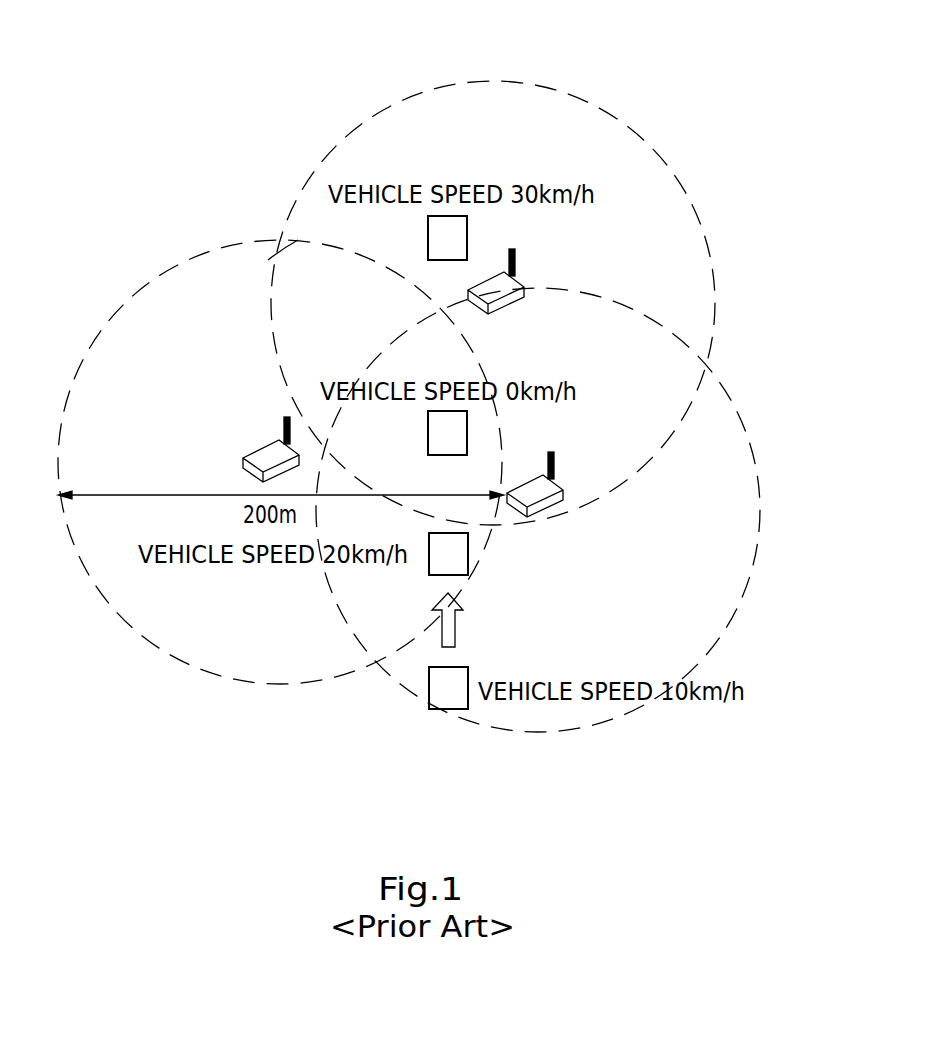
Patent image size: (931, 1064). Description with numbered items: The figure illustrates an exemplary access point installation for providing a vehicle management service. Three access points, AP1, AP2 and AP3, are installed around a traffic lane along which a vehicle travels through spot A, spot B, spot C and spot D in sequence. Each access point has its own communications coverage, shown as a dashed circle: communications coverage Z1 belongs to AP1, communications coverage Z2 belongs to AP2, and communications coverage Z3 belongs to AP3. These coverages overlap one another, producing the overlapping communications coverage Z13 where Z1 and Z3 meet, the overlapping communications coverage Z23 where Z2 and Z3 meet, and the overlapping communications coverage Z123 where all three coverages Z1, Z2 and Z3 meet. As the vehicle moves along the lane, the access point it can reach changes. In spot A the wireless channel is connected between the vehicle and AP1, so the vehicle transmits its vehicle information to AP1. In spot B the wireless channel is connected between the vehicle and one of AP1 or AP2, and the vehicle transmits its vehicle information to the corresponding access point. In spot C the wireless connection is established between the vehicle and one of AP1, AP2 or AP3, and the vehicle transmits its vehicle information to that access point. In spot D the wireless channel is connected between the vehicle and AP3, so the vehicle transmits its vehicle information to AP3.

The communications coverage of AP 1 Z1 is at (722, 632).
The communications coverage of AP 2 Z2 is at (150, 636).
The communications coverage of AP 3 Z3 is at (528, 80).
The overlapping communications coverage of AP 1 and AP 3 Z13 is at (677, 388).
The overlapping communications coverage of AP 2 and AP 3 Z23 is at (297, 262).
The overlapping communications coverage of AP 1, AP 2 and AP 3 Z123 is at (447, 502).
The access point 1 AP1 is at (541, 467).
The access point 2 AP2 is at (265, 439).
The access point 3 AP3 is at (514, 265).
The spot A is at (448, 688).
The spot B is at (448, 554).
The spot C is at (447, 433).
The spot D is at (447, 238).